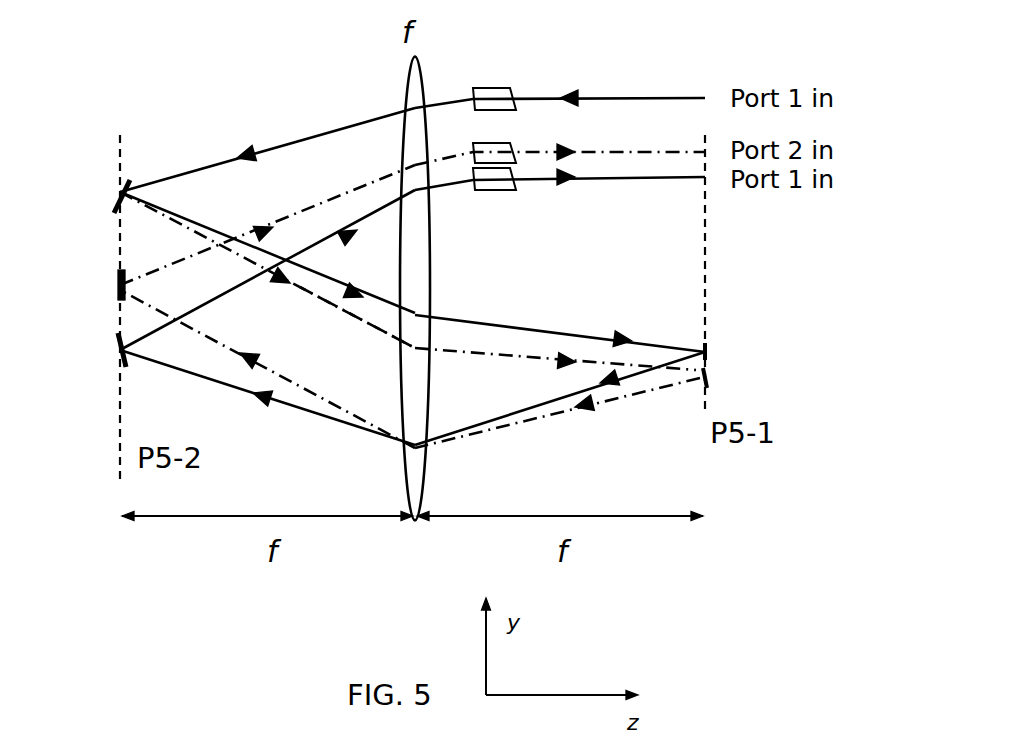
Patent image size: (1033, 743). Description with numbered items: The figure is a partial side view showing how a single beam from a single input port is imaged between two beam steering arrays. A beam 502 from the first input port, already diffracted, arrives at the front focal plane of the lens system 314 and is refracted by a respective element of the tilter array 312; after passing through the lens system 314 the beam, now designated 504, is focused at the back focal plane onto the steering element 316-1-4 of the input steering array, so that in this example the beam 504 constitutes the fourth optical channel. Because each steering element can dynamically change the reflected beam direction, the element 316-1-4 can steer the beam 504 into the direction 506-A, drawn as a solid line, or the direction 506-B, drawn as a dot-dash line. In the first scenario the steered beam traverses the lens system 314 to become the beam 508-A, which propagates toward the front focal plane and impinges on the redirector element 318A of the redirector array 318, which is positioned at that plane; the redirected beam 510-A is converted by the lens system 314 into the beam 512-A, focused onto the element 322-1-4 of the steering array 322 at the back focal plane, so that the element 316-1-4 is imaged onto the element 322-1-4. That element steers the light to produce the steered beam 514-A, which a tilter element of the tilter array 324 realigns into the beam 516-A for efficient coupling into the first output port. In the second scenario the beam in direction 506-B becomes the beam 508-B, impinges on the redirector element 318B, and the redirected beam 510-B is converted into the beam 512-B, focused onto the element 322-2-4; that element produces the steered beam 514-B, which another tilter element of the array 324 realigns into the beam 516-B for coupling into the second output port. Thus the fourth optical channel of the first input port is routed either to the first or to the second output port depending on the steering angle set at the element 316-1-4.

The tilter array 312 is at (494, 84).
The lens system 314 is at (418, 77).
The steering element 316-1-4 is at (82, 196).
The redirector array 318 is at (776, 350).
The redirector element 318A is at (738, 354).
The redirector element 318B is at (737, 381).
The steering array 322 is at (80, 322).
The steering element 322-1-4 is at (83, 350).
The steering element 322-2-4 is at (84, 285).
The tilter array 324 is at (494, 187).
The beam 502 is at (610, 98).
The beam 504 is at (298, 143).
The steered beam direction 506-A is at (326, 264).
The steered beam direction 506-B is at (332, 310).
The beam 508-A is at (605, 335).
The beam 508-B is at (518, 360).
The redirected beam 510-A is at (520, 412).
The redirected beam 510-B is at (553, 418).
The focused beam 512-A is at (290, 410).
The focused beam 512-B is at (280, 376).
The steered beam 514-A is at (262, 288).
The steered beam 514-B is at (348, 194).
The realigned beam 516-A is at (612, 180).
The realigned beam 516-B is at (612, 151).